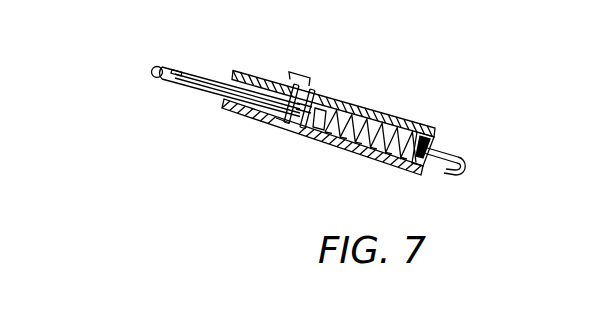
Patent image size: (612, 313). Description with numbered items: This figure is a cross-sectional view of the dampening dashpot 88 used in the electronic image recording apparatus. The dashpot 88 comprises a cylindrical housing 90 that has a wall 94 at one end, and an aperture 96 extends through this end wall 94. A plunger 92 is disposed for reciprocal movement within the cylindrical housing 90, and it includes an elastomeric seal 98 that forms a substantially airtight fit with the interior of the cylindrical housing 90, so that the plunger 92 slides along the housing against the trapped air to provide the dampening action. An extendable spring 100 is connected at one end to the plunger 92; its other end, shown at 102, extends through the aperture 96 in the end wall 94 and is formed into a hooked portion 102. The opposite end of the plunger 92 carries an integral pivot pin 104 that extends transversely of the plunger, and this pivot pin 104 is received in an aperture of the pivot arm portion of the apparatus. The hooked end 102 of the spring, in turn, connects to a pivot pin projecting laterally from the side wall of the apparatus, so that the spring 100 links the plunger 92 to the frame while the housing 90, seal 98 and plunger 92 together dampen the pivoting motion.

The dampening dashpot 88 is at (308, 76).
The cylindrical housing 90 is at (374, 108).
The plunger 92 is at (183, 73).
The wall 94 is at (433, 140).
The aperture 96 is at (446, 152).
The elastomeric seal 98 is at (282, 133).
The extendable spring 100 is at (343, 152).
The hooked portion of the spring 102 is at (459, 166).
The integral pivot pin 104 is at (152, 69).